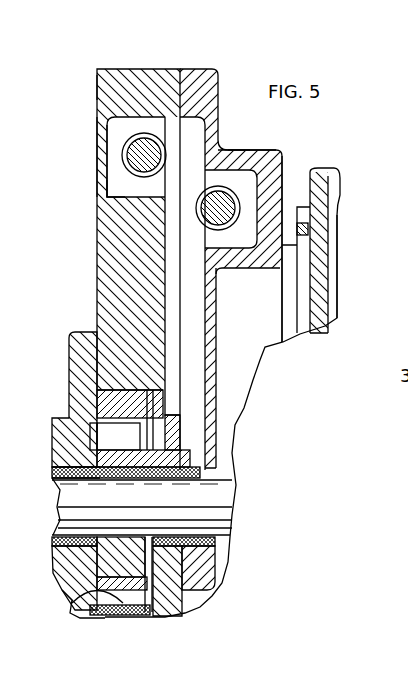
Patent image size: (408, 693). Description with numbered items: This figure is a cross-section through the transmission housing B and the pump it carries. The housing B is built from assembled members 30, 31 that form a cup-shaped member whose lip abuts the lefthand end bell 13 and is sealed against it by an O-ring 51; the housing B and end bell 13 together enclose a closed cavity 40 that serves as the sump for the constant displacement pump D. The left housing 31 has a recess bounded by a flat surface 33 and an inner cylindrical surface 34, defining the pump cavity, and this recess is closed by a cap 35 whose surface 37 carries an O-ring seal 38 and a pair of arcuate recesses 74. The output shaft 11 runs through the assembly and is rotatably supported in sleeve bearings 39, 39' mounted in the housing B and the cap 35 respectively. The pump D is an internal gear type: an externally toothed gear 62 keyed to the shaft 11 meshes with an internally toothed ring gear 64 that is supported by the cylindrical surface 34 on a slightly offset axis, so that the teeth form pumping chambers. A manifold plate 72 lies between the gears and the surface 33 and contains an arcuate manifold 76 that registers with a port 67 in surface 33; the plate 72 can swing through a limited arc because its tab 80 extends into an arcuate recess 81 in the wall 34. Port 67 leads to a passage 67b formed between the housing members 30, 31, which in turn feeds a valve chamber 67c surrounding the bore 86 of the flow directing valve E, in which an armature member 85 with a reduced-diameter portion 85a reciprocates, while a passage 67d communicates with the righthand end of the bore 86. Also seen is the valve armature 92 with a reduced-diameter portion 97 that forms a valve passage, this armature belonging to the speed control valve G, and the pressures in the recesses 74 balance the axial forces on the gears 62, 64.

The housing B is at (96, 85).
The left housing 31 is at (130, 69).
The housing member 30 is at (210, 69).
The lefthand end bell 13 is at (333, 172).
The speed control valve G is at (133, 147).
The flow directing valve E is at (240, 166).
The valve chamber 67c is at (268, 162).
The passage 67d is at (116, 147).
The portion of reduced diameter 97 is at (127, 164).
The valve armature 92 is at (140, 172).
The armature member 85 is at (236, 200).
The portion of reduced diameter 85a is at (200, 228).
The bore 86 is at (248, 283).
The O-ring 51 is at (310, 233).
The cap 35 is at (70, 348).
The passage 67b is at (208, 326).
The surface 37 is at (107, 392).
The manifold plate 72 is at (150, 398).
The cavity 40 is at (234, 381).
The O-ring seal 38 is at (96, 389).
The internally toothed ring gear 64 is at (90, 426).
The port 67 is at (152, 436).
The arcuate recesses 74 is at (92, 441).
The externally toothed gear 62 is at (96, 459).
The arcuate manifold 76 is at (180, 443).
The sleeve bearing 39' is at (54, 485).
The sleeve bearing 39 is at (157, 485).
The output shaft 11 is at (217, 520).
The constant displacement pump D is at (92, 562).
The inner cylindrical surface 34 is at (76, 593).
The arcuate recess 81 is at (72, 615).
The flat surface 33 is at (132, 618).
The tab 80 is at (148, 613).